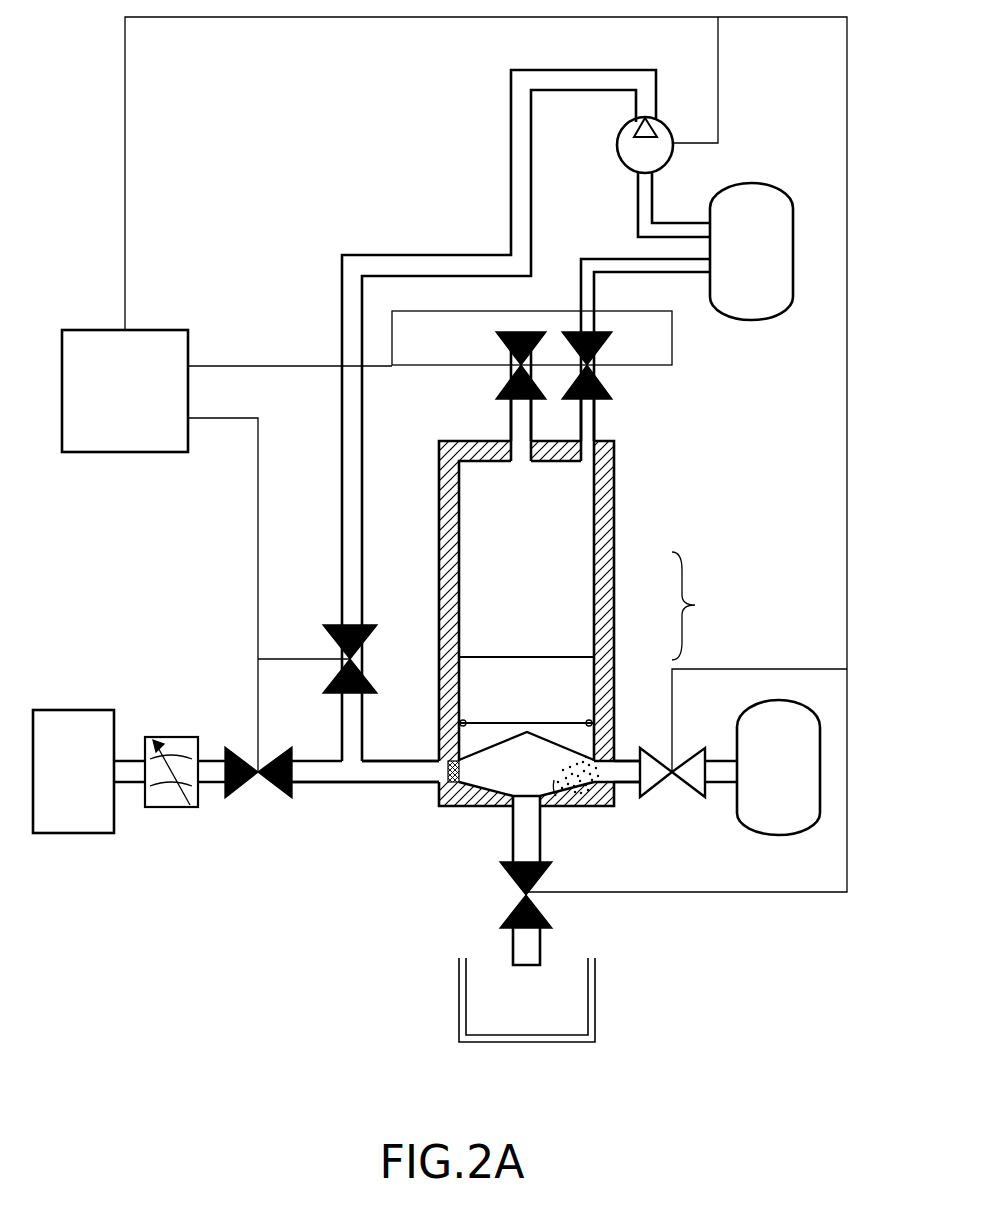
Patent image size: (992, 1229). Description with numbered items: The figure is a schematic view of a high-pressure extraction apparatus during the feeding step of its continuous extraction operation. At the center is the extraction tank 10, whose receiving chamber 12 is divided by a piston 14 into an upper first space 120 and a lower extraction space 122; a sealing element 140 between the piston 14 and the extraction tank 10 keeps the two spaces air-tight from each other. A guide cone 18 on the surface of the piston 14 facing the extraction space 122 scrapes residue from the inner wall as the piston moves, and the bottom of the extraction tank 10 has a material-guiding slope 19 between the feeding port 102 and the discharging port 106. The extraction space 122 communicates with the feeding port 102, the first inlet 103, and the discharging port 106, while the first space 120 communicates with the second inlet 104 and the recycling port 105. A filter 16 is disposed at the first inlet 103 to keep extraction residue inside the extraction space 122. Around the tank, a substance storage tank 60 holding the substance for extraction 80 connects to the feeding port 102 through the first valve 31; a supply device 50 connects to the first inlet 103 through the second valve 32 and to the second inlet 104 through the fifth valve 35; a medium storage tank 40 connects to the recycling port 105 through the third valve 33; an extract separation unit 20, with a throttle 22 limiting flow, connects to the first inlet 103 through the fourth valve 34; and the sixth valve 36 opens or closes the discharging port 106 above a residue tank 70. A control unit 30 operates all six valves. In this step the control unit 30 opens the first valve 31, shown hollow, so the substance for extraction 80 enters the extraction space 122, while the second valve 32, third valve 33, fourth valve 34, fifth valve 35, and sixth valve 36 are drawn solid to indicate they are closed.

The extraction tank 10 is at (605, 497).
The receiving chamber 12 is at (697, 606).
The piston 14 is at (504, 701).
The filter 16 is at (458, 760).
The guide cone 18 is at (490, 738).
The material-guiding slope 19 is at (555, 782).
The extract separation unit 20 is at (60, 778).
The throttle 22 is at (173, 807).
The control unit 30 is at (112, 399).
The first valve 31 is at (688, 785).
The second valve 32 is at (330, 625).
The third valve 33 is at (606, 388).
The fourth valve 34 is at (258, 775).
The fifth valve 35 is at (497, 388).
The sixth valve 36 is at (518, 895).
The medium storage tank 40 is at (737, 256).
The supply device 50 is at (661, 154).
The substance storage tank 60 is at (765, 778).
The residue tank 70 is at (557, 1013).
The substance for extraction 80 is at (575, 768).
The feeding port 102 is at (597, 768).
The first inlet 103 is at (443, 768).
The second inlet 104 is at (519, 458).
The recycling port 105 is at (587, 458).
The discharging port 106 is at (525, 802).
The first space 120 is at (548, 550).
The extraction space 122 is at (542, 770).
The sealing element 140 is at (460, 720).